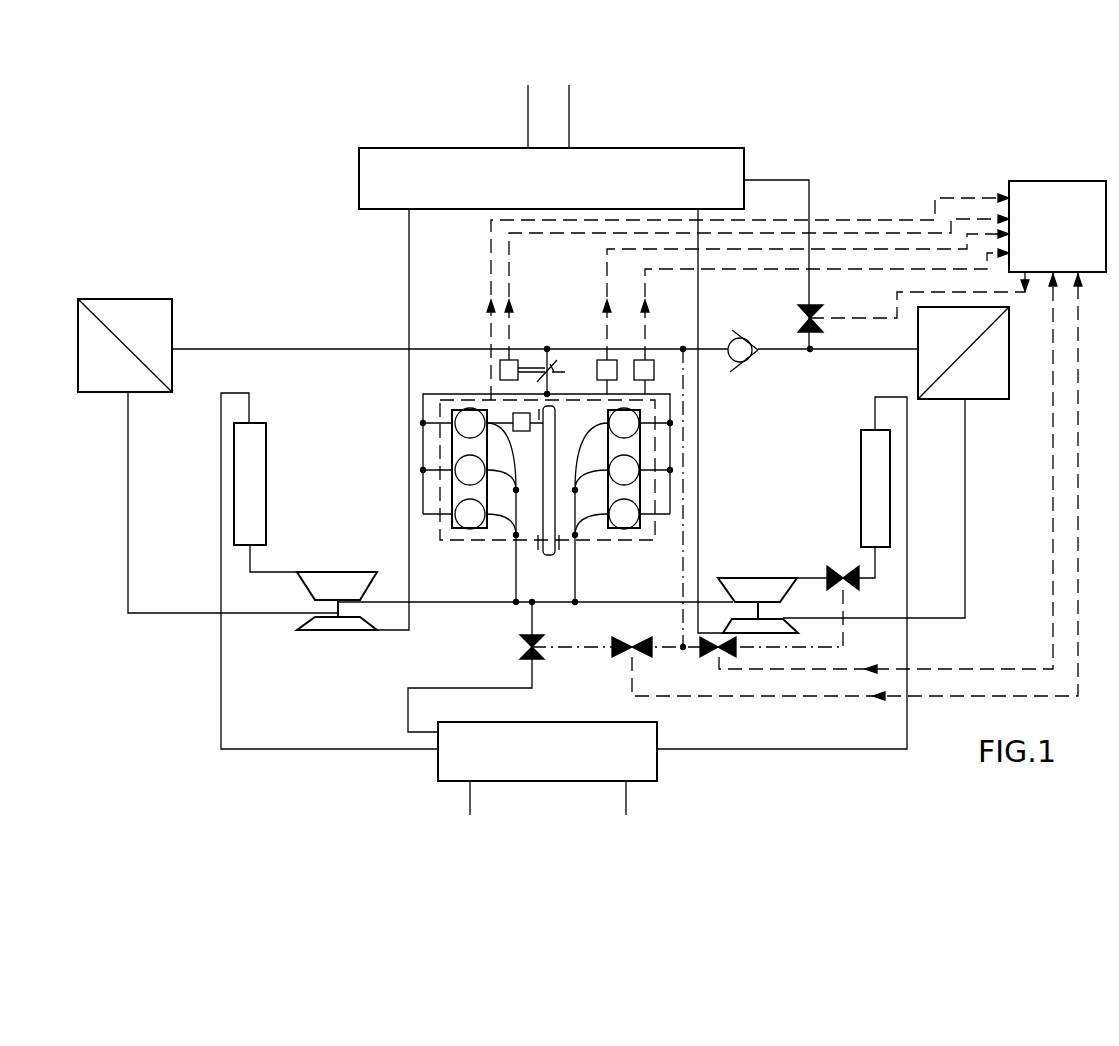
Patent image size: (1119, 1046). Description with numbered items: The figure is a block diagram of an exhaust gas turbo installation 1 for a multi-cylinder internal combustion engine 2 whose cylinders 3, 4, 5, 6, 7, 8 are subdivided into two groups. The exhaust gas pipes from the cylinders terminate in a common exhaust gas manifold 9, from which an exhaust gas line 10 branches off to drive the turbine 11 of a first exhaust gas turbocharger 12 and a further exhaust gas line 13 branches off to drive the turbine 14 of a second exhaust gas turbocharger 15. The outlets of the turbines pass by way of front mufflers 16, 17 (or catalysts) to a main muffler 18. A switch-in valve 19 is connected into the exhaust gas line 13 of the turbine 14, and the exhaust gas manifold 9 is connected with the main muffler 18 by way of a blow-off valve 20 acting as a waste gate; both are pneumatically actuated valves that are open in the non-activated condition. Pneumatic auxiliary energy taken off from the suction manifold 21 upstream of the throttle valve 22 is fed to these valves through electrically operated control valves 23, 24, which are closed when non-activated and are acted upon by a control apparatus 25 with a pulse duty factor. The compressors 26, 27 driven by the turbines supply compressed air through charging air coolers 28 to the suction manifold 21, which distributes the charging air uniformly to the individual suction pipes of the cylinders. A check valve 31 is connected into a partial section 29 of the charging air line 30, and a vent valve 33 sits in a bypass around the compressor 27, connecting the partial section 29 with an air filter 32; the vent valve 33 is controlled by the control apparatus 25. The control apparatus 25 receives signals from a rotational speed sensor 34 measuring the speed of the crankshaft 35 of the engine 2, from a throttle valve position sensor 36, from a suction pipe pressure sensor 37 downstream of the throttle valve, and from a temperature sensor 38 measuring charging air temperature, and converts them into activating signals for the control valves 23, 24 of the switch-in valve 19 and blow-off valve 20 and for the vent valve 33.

The exhaust gas turbo installation 1 is at (253, 237).
The internal combustion engine 2 is at (470, 391).
The cylinder 3 is at (470, 514).
The cylinder 4 is at (470, 470).
The cylinder 5 is at (470, 423).
The cylinder 6 is at (624, 514).
The cylinder 7 is at (624, 470).
The cylinder 8 is at (624, 423).
The exhaust gas manifold 9 is at (557, 597).
The exhaust gas line 10 is at (457, 595).
The turbine 11 is at (335, 577).
The first exhaust gas turbocharger 12 is at (335, 609).
The exhaust gas line 13 is at (647, 578).
The turbine 14 is at (757, 583).
The second exhaust gas turbocharger 15 is at (765, 608).
The front muffler 16 is at (255, 452).
The front muffler 17 is at (870, 462).
The main muffler 18 is at (645, 757).
The switch-in valve 19 is at (850, 588).
The blow-off valve 20 is at (522, 650).
The suction manifold 21 is at (543, 354).
The throttle valve 22 is at (557, 368).
The control valve 23 is at (712, 657).
The control valve 24 is at (623, 655).
The control apparatus 25 is at (1055, 190).
The compressor 26 is at (340, 622).
The compressor 27 is at (783, 628).
The charging air cooler 28 is at (123, 307).
The partial section 29 is at (787, 353).
The charging air line 30 is at (352, 344).
The check valve 31 is at (742, 358).
The air filter 32 is at (724, 157).
The vent valve 33 is at (823, 313).
The rotational speed sensor 34 is at (523, 433).
The crankshaft 35 is at (549, 447).
The throttle valve position sensor 36 is at (497, 358).
The suction pipe pressure sensor 37 is at (602, 358).
The temperature sensor 38 is at (648, 360).